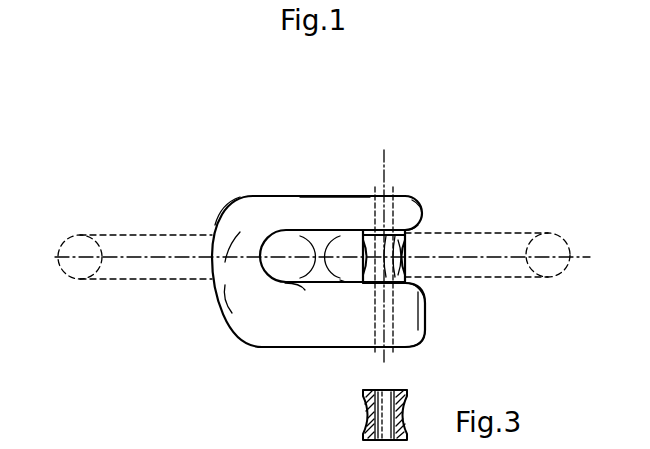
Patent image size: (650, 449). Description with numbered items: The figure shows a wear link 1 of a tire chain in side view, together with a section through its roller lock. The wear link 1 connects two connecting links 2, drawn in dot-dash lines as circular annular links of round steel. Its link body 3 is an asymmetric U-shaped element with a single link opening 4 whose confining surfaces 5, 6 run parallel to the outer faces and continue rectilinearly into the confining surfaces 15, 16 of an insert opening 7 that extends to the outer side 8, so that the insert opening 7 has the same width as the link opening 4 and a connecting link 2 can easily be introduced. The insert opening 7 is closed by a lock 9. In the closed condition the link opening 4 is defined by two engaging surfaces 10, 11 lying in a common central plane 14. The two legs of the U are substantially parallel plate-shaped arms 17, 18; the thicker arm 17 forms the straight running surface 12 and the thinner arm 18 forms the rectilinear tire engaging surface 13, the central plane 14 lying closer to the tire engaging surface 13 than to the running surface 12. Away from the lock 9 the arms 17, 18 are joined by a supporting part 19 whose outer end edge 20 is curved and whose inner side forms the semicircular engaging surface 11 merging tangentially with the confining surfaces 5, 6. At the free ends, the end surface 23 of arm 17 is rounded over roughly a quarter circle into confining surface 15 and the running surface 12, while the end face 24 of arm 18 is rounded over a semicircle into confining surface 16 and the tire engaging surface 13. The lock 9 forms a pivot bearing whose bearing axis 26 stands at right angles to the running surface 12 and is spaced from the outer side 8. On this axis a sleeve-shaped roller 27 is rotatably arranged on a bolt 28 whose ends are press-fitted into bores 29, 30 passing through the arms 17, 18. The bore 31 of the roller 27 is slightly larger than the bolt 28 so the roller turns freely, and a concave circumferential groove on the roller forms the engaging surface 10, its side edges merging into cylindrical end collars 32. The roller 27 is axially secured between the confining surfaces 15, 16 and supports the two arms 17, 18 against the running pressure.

In FIG. 1, the wear link 1 is at (270, 152).
In FIG. 1, the connecting link 2 is at (140, 282).
In FIG. 1, the link body 3 is at (250, 193).
In FIG. 1, the link opening 4 is at (329, 286).
In FIG. 1, the confining surface 5 is at (299, 292).
In FIG. 1, the confining surface 6 is at (304, 231).
In FIG. 1, the insert opening 7 is at (412, 240).
In FIG. 1, the outer side 8 is at (433, 285).
In FIG. 1, the lock 9 is at (360, 283).
In FIG. 1, the engaging surface 10 is at (365, 258).
In FIG. 3, the engaging surface 10 is at (363, 418).
In FIG. 1, the engaging surface 11 is at (259, 257).
In FIG. 1, the running surface 12 is at (311, 348).
In FIG. 1, the tire engaging surface 13 is at (337, 195).
In FIG. 1, the central plane 14 is at (228, 252).
In FIG. 1, the confining surface 15 is at (384, 283).
In FIG. 1, the confining surface 16 is at (393, 228).
In FIG. 1, the arm 17 is at (340, 335).
In FIG. 1, the arm 18 is at (395, 194).
In FIG. 1, the supporting part 19 is at (226, 273).
In FIG. 1, the end edge 20 is at (218, 218).
In FIG. 1, the end surface 23 is at (425, 315).
In FIG. 1, the end face 24 is at (425, 205).
In FIG. 1, the bearing axis 26 is at (391, 168).
In FIG. 1, the roller 27 is at (404, 268).
In FIG. 3, the roller 27 is at (362, 394).
In FIG. 1, the bolt 28 is at (407, 252).
In FIG. 1, the bore 29 is at (405, 340).
In FIG. 1, the bore 30 is at (378, 190).
In FIG. 3, the bore of roller 31 is at (383, 392).
In FIG. 3, the end collar 32 is at (407, 396).